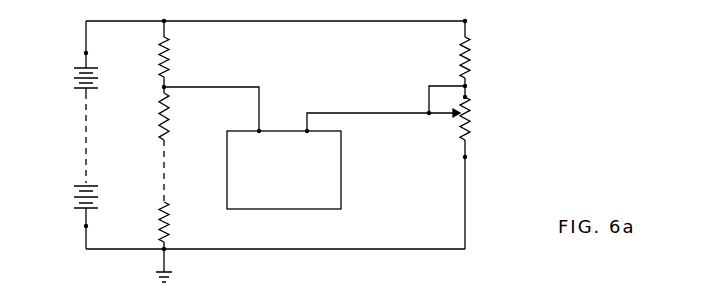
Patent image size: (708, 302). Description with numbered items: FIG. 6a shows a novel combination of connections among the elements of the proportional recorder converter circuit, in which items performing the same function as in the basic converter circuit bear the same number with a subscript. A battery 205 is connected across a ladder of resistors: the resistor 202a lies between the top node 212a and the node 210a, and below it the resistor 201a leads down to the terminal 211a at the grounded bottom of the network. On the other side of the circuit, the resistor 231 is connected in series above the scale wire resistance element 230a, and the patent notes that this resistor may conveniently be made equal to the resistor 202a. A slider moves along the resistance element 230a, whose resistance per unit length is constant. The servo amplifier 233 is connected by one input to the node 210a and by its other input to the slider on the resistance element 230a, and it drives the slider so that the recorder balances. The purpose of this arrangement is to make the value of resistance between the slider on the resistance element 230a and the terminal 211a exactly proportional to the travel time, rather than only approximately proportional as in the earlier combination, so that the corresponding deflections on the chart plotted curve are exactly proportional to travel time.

The battery 205 is at (85, 131).
The junction node 212a is at (161, 23).
The resistor 202a is at (169, 56).
The junction node 210a is at (160, 90).
The resistor 201a is at (168, 114).
The terminal 211a is at (167, 247).
The servo amplifier 233 is at (262, 177).
The resistor 231 is at (470, 62).
The scale wire resistance element 230a is at (470, 117).